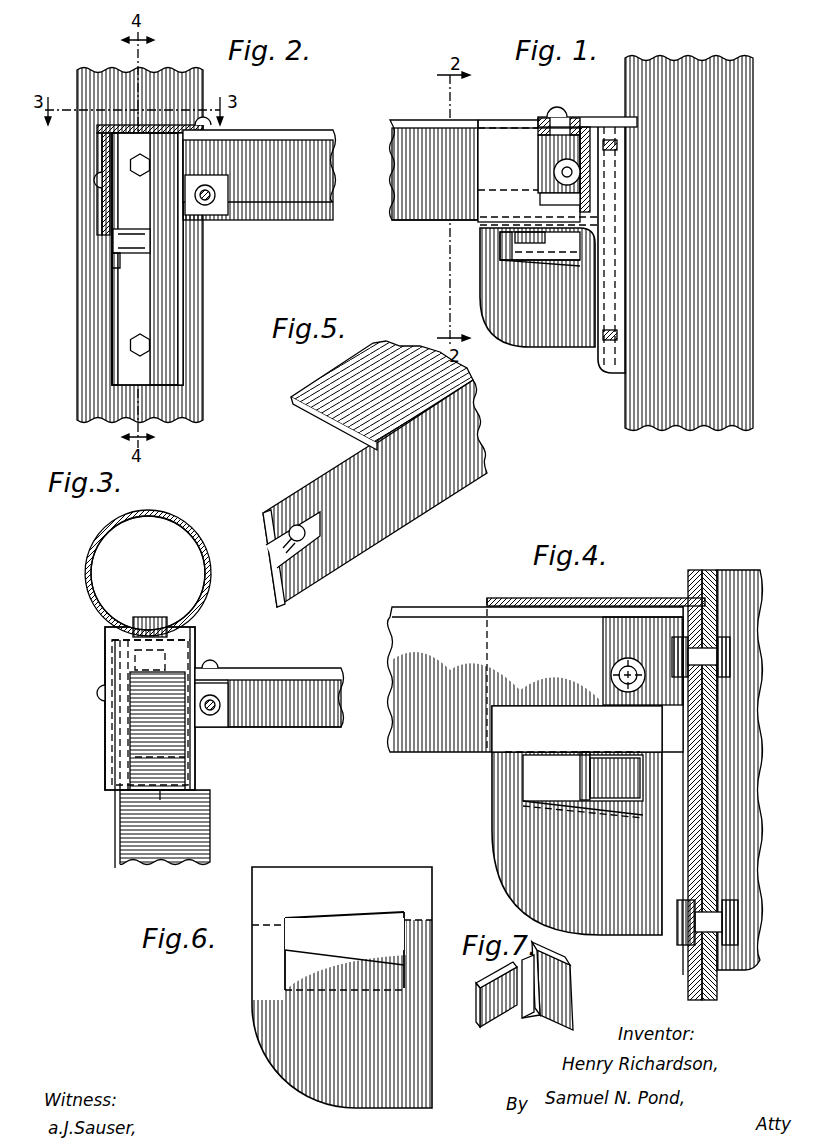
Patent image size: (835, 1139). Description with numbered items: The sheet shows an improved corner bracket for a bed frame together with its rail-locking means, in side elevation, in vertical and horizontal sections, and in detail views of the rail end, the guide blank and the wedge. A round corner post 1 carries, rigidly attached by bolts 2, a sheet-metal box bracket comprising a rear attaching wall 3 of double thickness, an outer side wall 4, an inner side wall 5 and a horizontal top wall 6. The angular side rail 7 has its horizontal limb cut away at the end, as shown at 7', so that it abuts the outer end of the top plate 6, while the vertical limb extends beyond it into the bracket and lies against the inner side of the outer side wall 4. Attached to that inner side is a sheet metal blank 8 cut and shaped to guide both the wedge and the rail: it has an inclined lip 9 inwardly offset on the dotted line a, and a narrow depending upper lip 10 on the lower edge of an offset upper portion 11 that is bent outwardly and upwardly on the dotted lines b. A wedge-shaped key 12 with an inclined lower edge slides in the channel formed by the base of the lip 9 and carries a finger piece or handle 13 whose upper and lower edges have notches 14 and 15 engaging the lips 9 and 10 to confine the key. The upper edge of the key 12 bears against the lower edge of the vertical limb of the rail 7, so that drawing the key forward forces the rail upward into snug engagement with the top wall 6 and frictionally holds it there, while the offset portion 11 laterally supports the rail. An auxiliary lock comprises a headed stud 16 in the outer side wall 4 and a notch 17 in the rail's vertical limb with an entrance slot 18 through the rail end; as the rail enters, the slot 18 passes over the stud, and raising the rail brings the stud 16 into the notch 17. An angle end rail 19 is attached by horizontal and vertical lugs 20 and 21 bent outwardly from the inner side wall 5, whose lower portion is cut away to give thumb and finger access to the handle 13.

In FIG. 2, the round corner post 1 is at (173, 72).
In FIG. 1, the round corner post 1 is at (678, 60).
In FIG. 3, the round corner post 1 is at (178, 527).
In FIG. 4, the round corner post 1 is at (740, 592).
In FIG. 2, the bolts 2 is at (142, 163).
In FIG. 1, the bolts 2 is at (604, 127).
In FIG. 3, the bolts 2 is at (112, 672).
In FIG. 4, the bolts 2 is at (688, 640).
In FIG. 2, the rear attaching wall 3 is at (147, 259).
In FIG. 1, the rear attaching wall 3 is at (625, 244).
In FIG. 3, the rear attaching wall 3 is at (190, 652).
In FIG. 4, the rear attaching wall 3 is at (690, 790).
In FIG. 2, the outer side wall 4 is at (97, 234).
In FIG. 3, the outer side wall 4 is at (105, 766).
In FIG. 4, the outer side wall 4 is at (678, 940).
In FIG. 2, the inner side wall 5 is at (186, 228).
In FIG. 1, the inner side wall 5 is at (490, 210).
In FIG. 3, the inner side wall 5 is at (196, 758).
In FIG. 1, the horizontal top wall 6 is at (514, 119).
In FIG. 3, the horizontal top wall 6 is at (130, 727).
In FIG. 4, the horizontal top wall 6 is at (598, 600).
In FIG. 2, the side rail 7 is at (78, 184).
In FIG. 1, the side rail 7 is at (421, 174).
In FIG. 5, the side rail 7 is at (387, 493).
In FIG. 3, the side rail 7 is at (162, 768).
In FIG. 4, the side rail 7 is at (536, 679).
In FIG. 1, the cut-away end of horizontal limb 7' is at (487, 108).
In FIG. 5, the cut-away end of horizontal limb 7' is at (382, 395).
In FIG. 3, the cut-away end of horizontal limb 7' is at (120, 817).
In FIG. 4, the cut-away end of horizontal limb 7' is at (498, 664).
In FIG. 2, the sheet metal blank 8 is at (113, 308).
In FIG. 1, the sheet metal blank 8 is at (527, 306).
In FIG. 4, the sheet metal blank 8 is at (522, 856).
In FIG. 6, the sheet metal blank 8 is at (342, 987).
In FIG. 2, the inclined lip 9 is at (114, 268).
In FIG. 1, the inclined lip 9 is at (515, 268).
In FIG. 3, the inclined lip 9 is at (132, 742).
In FIG. 6, the inclined lip 9 is at (370, 965).
In FIG. 1, the depending upper lip 10 is at (502, 240).
In FIG. 6, the depending upper lip 10 is at (352, 914).
In FIG. 2, the offset upper portion 11 is at (116, 215).
In FIG. 4, the offset upper portion 11 is at (577, 729).
In FIG. 6, the offset upper portion 11 is at (337, 872).
In FIG. 1, the wedge-shaped key 12 is at (540, 246).
In FIG. 4, the wedge-shaped key 12 is at (607, 752).
In FIG. 7, the wedge-shaped key 12 is at (565, 993).
In FIG. 2, the finger piece or handle 13 is at (138, 250).
In FIG. 1, the finger piece or handle 13 is at (503, 250).
In FIG. 3, the finger piece or handle 13 is at (160, 758).
In FIG. 4, the finger piece or handle 13 is at (580, 775).
In FIG. 7, the finger piece or handle 13 is at (495, 978).
In FIG. 7, the notch 14 is at (526, 1018).
In FIG. 7, the notch 15 is at (536, 961).
In FIG. 2, the headed stud 16 is at (100, 173).
In FIG. 1, the headed stud 16 is at (545, 118).
In FIG. 3, the headed stud 16 is at (110, 700).
In FIG. 4, the headed stud 16 is at (640, 658).
In FIG. 5, the notch 17 is at (323, 565).
In FIG. 4, the notch 17 is at (615, 668).
In FIG. 5, the entrance slot 18 is at (283, 548).
In FIG. 2, the angle end rail 19 is at (312, 129).
In FIG. 1, the angle end rail 19 is at (560, 207).
In FIG. 3, the angle end rail 19 is at (279, 681).
In FIG. 2, the horizontal attachment lug 20 is at (212, 127).
In FIG. 1, the horizontal attachment lug 20 is at (575, 112).
In FIG. 3, the horizontal attachment lug 20 is at (226, 724).
In FIG. 2, the vertical attachment lug 21 is at (228, 206).
In FIG. 6, the dotted line a is at (356, 990).
In FIG. 6, the dotted lines b is at (268, 920).